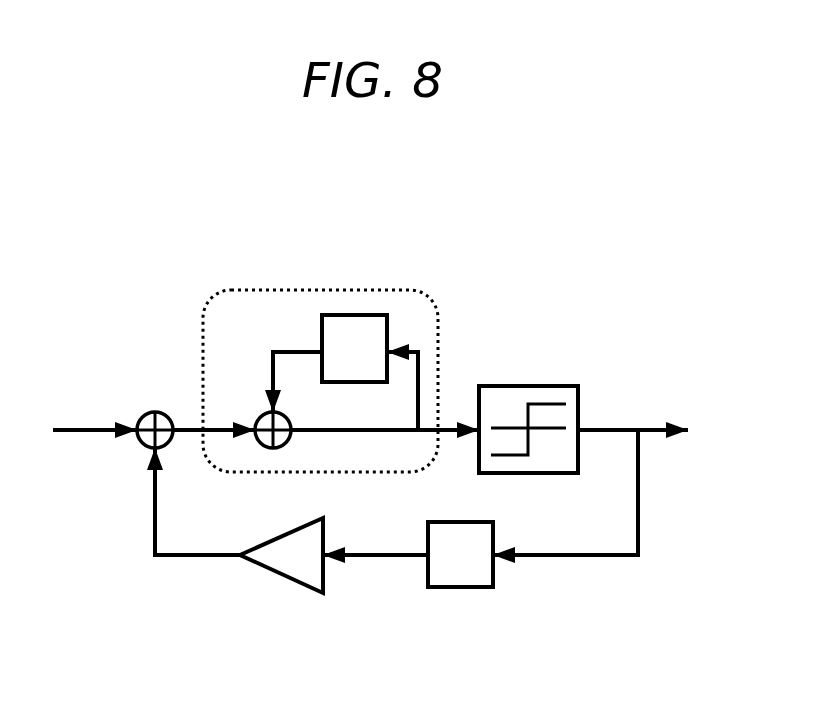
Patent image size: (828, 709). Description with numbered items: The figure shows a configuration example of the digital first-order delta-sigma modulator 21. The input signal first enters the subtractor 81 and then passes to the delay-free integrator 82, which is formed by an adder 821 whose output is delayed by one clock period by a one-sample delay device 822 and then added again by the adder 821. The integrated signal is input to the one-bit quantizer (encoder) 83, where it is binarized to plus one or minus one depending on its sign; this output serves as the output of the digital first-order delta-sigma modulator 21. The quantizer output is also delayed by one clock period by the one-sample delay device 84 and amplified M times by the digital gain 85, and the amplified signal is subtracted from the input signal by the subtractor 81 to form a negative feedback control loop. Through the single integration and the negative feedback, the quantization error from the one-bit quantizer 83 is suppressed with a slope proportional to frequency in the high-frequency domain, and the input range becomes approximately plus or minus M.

The digital first-order delta-sigma modulator 21 is at (499, 203).
The subtractor 81 is at (153, 412).
The delay-free integrator 82 is at (320, 290).
The adder 821 is at (291, 422).
The one-sample delay device 822 is at (322, 333).
The one-bit quantizer (encoder) 83 is at (525, 386).
The one-sample delay device 84 is at (462, 588).
The digital gain 85 is at (285, 570).